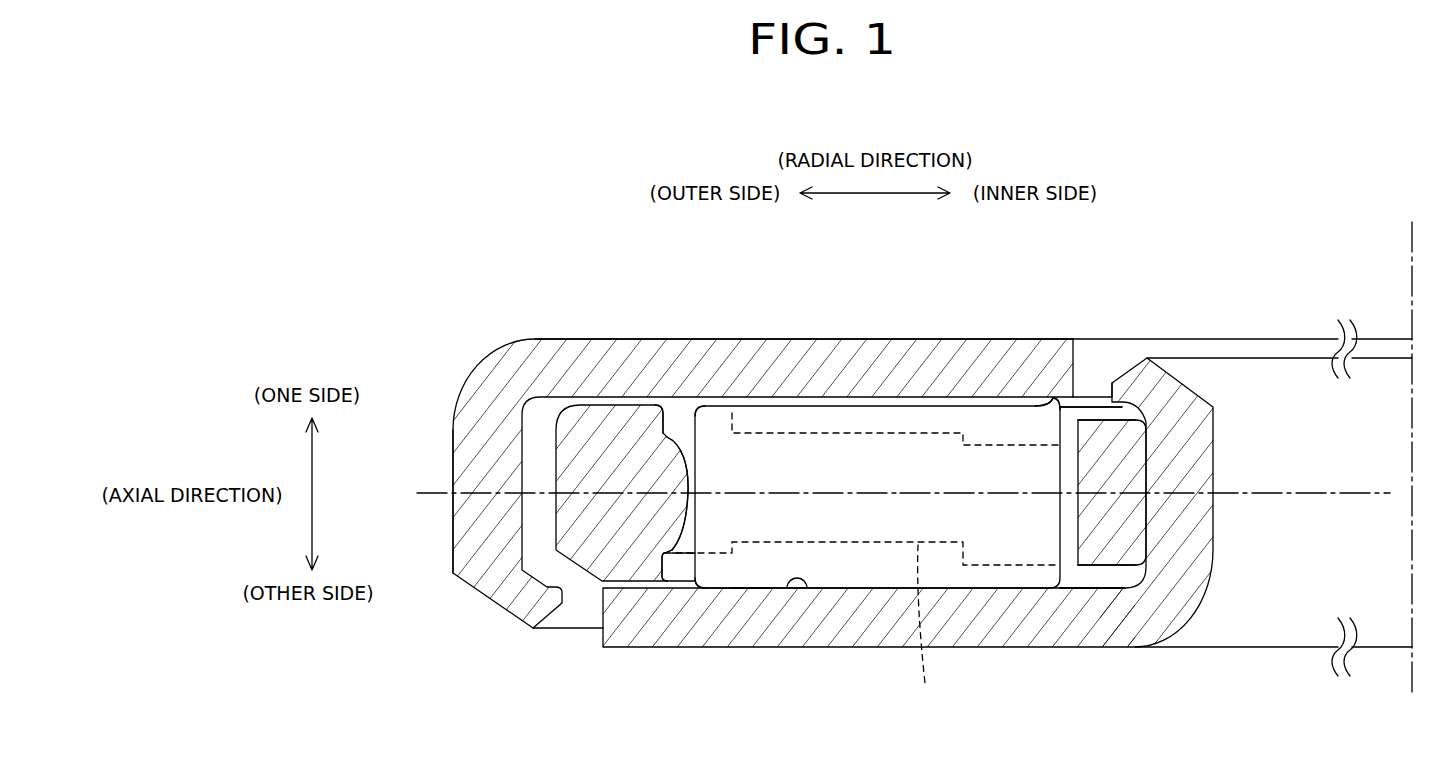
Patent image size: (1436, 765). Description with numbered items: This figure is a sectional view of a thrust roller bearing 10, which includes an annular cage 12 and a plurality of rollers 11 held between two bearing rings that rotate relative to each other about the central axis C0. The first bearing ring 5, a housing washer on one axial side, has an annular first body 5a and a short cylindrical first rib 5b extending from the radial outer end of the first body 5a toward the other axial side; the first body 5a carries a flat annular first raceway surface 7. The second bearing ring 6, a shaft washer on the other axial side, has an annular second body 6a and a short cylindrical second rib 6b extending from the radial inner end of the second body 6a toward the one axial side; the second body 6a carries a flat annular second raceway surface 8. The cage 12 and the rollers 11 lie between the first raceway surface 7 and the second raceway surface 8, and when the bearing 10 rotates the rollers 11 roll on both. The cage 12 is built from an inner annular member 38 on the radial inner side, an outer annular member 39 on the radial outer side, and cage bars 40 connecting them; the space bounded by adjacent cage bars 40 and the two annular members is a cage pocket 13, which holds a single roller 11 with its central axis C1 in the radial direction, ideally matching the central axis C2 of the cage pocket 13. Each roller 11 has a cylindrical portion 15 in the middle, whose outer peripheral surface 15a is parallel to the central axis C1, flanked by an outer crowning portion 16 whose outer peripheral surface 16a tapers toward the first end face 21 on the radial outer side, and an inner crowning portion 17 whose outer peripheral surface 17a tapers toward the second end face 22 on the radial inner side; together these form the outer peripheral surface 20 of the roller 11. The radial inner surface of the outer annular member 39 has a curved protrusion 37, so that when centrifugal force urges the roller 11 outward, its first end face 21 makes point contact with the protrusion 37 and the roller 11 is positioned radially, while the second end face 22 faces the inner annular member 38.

The first bearing ring 5 is at (780, 329).
The first body 5a is at (808, 370).
The first rib 5b is at (478, 470).
The second bearing ring 6 is at (988, 659).
The second body 6a is at (826, 625).
The second rib 6b is at (1195, 530).
The first raceway surface 7 is at (972, 405).
The second raceway surface 8 is at (787, 588).
The thrust roller bearing 10 is at (506, 334).
The roller 11 is at (858, 386).
The cage 12 is at (545, 457).
The cage pocket 13 is at (663, 394).
The cylindrical portion 15 is at (898, 425).
The outer peripheral surface of the cylindrical portion 15a is at (873, 590).
The outer crowning portion 16 is at (722, 415).
The outer peripheral surface of the outer crowning portion 16a is at (717, 589).
The inner crowning portion 17 is at (1032, 418).
The outer peripheral surface of the inner crowning portion 17a is at (1040, 588).
The outer peripheral surface 20 is at (750, 590).
The first end face 21 is at (683, 532).
The second end face 22 is at (1063, 535).
The protrusion 37 is at (708, 420).
The inner annular member 38 is at (1118, 460).
The outer annular member 39 is at (573, 525).
The cage bar 40 is at (918, 629).
The central axis C0 is at (1410, 235).
The central axis of the roller C1 is at (1352, 492).
The central axis of the cage pocket C2 is at (1352, 492).